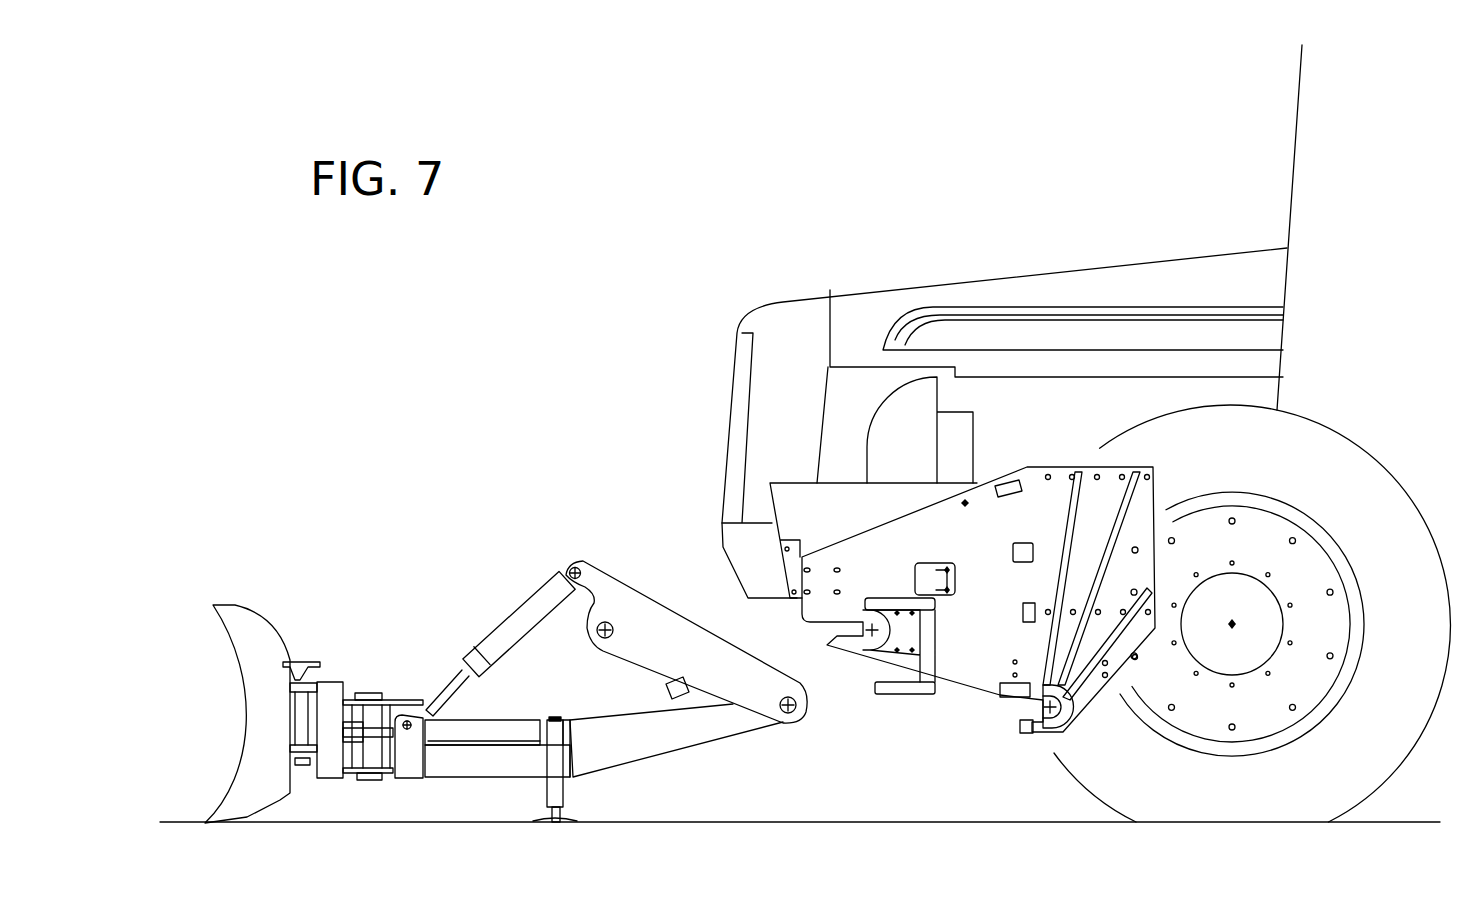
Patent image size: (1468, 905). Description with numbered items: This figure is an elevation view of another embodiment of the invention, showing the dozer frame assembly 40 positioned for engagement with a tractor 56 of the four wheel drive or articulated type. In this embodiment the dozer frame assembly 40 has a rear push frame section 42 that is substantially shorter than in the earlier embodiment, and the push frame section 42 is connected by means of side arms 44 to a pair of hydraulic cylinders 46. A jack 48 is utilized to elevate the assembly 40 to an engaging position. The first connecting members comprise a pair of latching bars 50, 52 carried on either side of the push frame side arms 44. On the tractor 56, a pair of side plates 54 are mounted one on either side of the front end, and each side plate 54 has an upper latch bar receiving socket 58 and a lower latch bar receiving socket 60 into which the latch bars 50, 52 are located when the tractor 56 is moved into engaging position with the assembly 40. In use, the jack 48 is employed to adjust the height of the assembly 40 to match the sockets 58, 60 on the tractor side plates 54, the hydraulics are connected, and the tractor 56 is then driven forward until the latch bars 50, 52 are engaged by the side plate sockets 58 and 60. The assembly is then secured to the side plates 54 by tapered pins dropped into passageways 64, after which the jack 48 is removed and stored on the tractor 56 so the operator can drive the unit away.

The dozer frame assembly 40 is at (374, 676).
The rear push frame section 42 is at (700, 737).
The side arms 44 is at (710, 592).
The hydraulic cylinders 46 is at (538, 603).
The jack 48 is at (560, 795).
The latching bar 50 is at (607, 620).
The latching bar 52 is at (788, 716).
The side plate 54 is at (1153, 467).
The tractor 56 is at (1223, 267).
The upper latch bar receiving socket 58 is at (857, 628).
The lower latch bar receiving socket 60 is at (1040, 707).
The passageway 64 is at (1038, 685).